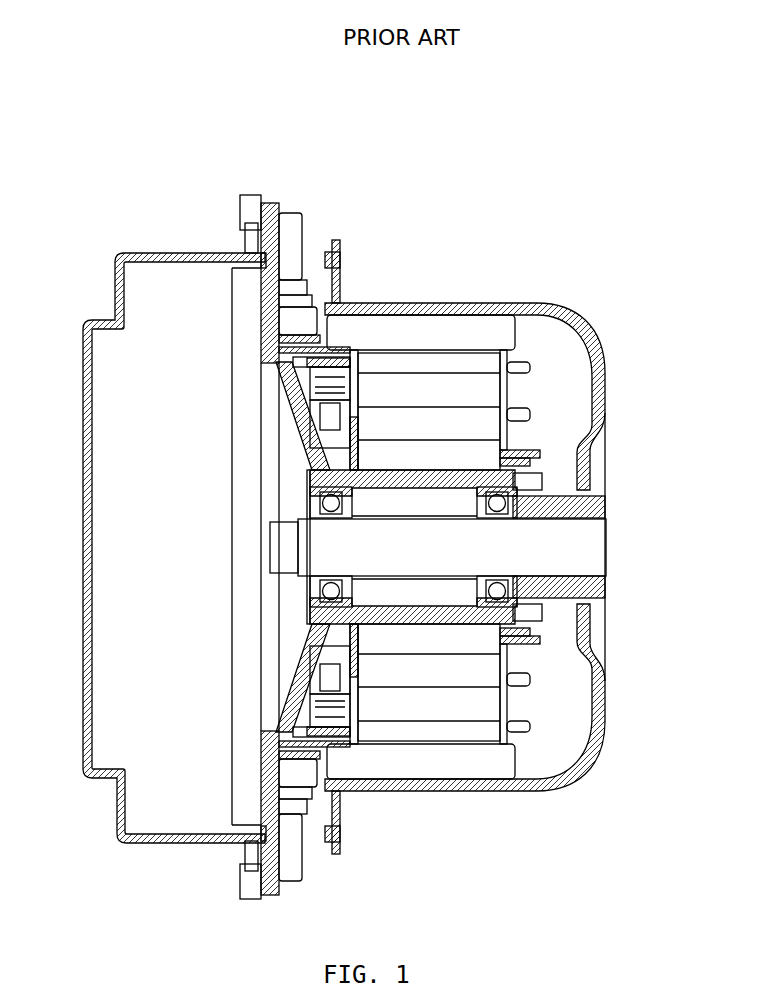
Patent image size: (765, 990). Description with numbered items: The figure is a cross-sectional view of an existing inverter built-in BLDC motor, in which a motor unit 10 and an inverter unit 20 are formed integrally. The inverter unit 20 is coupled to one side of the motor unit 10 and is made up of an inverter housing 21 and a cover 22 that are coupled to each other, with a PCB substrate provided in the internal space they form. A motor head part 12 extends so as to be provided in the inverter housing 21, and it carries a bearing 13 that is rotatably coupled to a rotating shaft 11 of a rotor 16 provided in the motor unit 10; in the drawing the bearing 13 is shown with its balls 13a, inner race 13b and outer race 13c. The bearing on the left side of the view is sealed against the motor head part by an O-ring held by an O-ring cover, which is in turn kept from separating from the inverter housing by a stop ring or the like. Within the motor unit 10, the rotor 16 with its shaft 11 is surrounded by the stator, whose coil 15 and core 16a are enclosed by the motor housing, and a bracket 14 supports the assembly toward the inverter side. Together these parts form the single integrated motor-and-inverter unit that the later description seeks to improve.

The motor unit 10 is at (512, 191).
The rotating shaft 11 is at (588, 553).
The motor head part 12 is at (423, 478).
The bearing 13 is at (302, 502).
The ball 13a is at (500, 503).
The inner race 13b is at (505, 516).
The outer race 13c is at (503, 490).
The bracket 14 is at (317, 476).
The coil 15 is at (477, 392).
The rotor 16 is at (490, 310).
The stator core 16a is at (448, 330).
The inverter unit 20 is at (136, 206).
The inverter housing 21 is at (266, 203).
The cover 22 is at (195, 252).